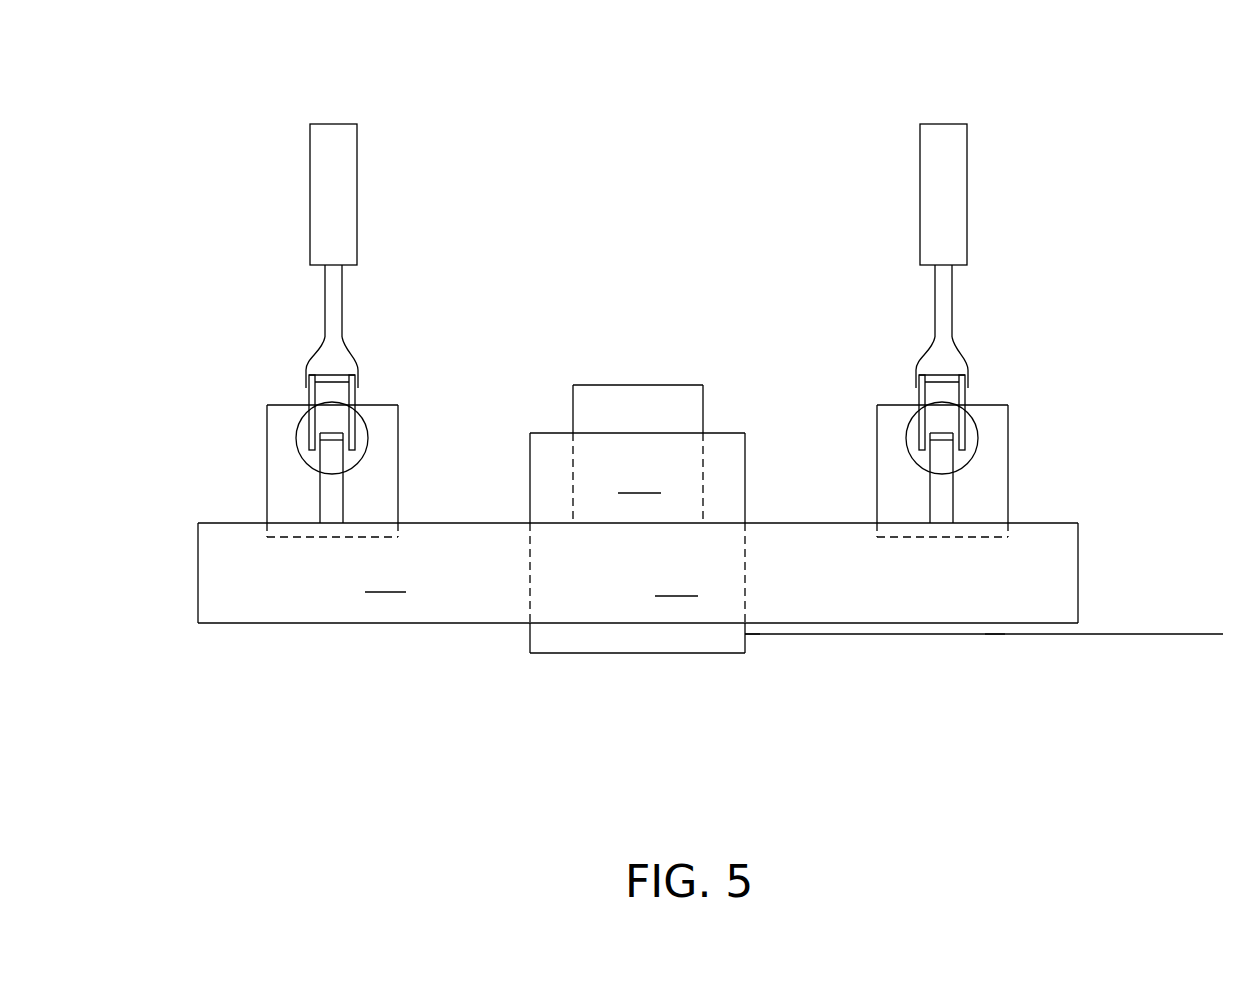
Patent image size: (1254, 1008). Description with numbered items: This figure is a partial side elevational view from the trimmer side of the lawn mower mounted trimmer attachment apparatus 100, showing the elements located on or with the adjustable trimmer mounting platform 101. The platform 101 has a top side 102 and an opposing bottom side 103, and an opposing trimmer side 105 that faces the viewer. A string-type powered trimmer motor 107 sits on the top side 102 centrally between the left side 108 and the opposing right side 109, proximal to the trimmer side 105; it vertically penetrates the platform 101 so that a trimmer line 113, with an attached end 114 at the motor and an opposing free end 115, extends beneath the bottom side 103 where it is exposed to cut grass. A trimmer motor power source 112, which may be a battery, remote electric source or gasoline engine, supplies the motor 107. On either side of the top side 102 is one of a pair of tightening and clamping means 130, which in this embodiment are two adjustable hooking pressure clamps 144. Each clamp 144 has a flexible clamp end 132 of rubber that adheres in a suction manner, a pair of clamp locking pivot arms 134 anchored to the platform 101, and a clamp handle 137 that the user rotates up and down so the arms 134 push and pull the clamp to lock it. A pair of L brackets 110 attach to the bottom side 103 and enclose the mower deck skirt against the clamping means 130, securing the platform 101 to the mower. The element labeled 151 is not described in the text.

The lawn mower mounted trimmer attachment apparatus 100 is at (867, 45).
The adjustable trimmer mounting platform 101 is at (387, 579).
The top side 102 is at (1052, 523).
The opposing bottom side 103 is at (432, 623).
The opposing trimmer side 105 is at (637, 573).
The string-type powered trimmer motor 107 is at (625, 653).
The left side 108 is at (198, 576).
The opposing right side 109 is at (1078, 577).
The L brackets 110 is at (398, 413).
The trimmer motor power source 112 is at (629, 408).
The trimmer line 113 is at (995, 635).
The attached end 114 is at (750, 634).
The opposing free end 115 is at (1223, 635).
The tightening and clamping means 130 is at (1033, 243).
The flexible clamp end 132 is at (365, 460).
The clamp locking pivot arms 134 is at (355, 393).
The clamp handle 137 is at (357, 230).
The adjustable hooking pressure clamps 144 is at (407, 280).
The spacer 151 is at (703, 403).